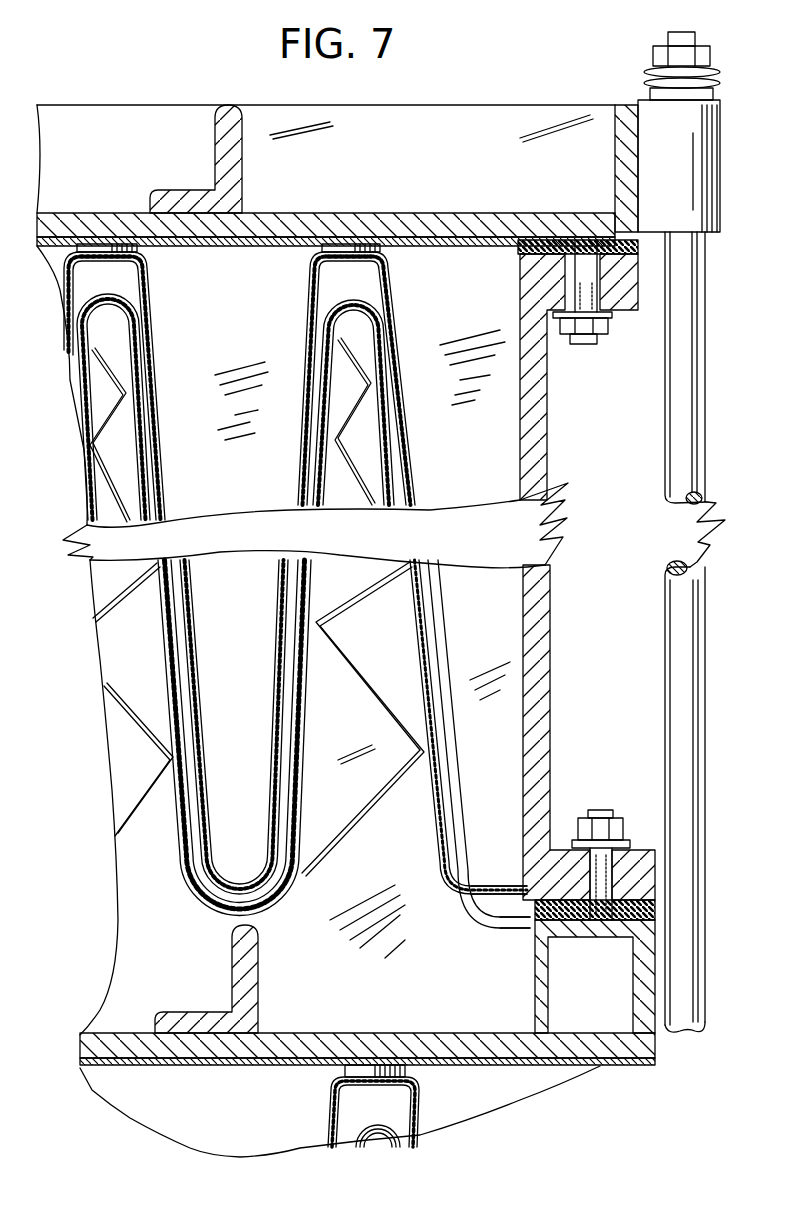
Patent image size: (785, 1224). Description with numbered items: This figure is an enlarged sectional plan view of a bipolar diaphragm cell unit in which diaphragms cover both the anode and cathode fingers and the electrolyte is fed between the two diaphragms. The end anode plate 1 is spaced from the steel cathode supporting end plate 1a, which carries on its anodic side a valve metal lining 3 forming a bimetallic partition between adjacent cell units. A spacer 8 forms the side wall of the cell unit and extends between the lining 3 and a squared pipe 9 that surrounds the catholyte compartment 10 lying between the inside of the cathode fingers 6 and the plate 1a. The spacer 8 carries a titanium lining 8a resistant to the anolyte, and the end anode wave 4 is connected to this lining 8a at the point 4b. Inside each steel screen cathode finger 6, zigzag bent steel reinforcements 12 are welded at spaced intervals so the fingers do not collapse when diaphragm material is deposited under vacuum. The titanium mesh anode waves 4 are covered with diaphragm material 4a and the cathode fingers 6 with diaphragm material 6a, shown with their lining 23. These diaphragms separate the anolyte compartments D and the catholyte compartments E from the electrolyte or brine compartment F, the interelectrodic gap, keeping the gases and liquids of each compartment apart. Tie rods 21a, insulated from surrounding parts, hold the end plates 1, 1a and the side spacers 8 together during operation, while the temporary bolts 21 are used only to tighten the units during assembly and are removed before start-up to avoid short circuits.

The end anode plate 1 is at (453, 212).
The cathode supporting end plate 1a is at (320, 1040).
The valve metal lining 3 is at (472, 240).
The anode waves 4 is at (156, 405).
The diaphragm material on anode waves 4a is at (178, 600).
The connection of end anode wave to lining 4b is at (522, 887).
The cathode waves or fingers 6 is at (131, 434).
The diaphragm material on cathode fingers 6a is at (181, 650).
The spacer 8 is at (548, 488).
The titanium lining 8a is at (520, 432).
The squared pipe 9 is at (578, 971).
The catholyte compartment 10 is at (240, 955).
The zigzag bent steel reinforcements 12 is at (100, 488).
The temporary bolts 21 is at (608, 812).
The tie rods 21a is at (705, 682).
The lining 23 is at (72, 290).
The anolyte compartments D is at (188, 431).
The catholyte compartments E is at (144, 776).
The electrolyte or brine compartment (interelectrodic gap) F is at (140, 355).